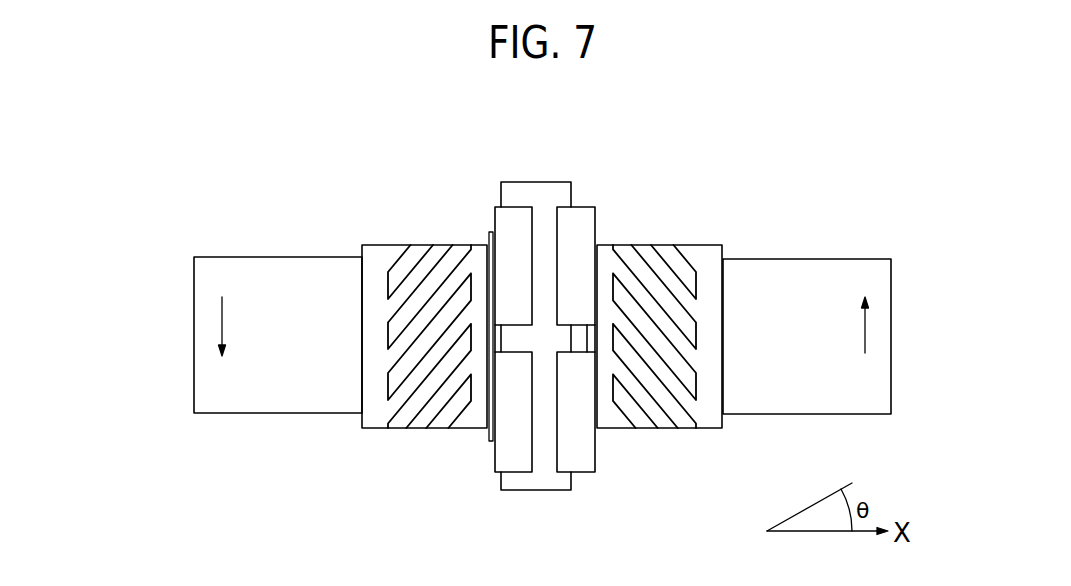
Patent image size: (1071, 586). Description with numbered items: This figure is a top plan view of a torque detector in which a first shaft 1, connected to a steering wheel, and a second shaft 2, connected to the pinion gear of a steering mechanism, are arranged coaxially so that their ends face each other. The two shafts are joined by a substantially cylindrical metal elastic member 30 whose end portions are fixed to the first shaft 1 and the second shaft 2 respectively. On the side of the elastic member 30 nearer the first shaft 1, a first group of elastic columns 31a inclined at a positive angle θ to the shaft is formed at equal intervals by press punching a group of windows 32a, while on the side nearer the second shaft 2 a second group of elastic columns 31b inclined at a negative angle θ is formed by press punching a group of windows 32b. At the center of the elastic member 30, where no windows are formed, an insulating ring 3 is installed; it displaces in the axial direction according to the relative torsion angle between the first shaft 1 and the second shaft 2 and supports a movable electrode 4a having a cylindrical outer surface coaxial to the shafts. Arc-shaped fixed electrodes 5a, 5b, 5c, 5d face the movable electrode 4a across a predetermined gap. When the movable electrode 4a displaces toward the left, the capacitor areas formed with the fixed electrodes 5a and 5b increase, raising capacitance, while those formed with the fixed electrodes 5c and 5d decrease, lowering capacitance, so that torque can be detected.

The first shaft 1 is at (219, 263).
The second shaft 2 is at (853, 268).
The ring 3 is at (489, 438).
The movable electrode 4a is at (510, 193).
The first fixed electrode 5a is at (502, 218).
The second fixed electrode 5b is at (505, 463).
The fixed electrode 5c is at (589, 462).
The fixed electrode 5d is at (590, 215).
The elastic member 30 is at (378, 425).
The first group of elastic columns 31a is at (418, 272).
The second group of elastic columns 31b is at (663, 268).
The group of windows 32a is at (393, 325).
The group of windows 32b is at (690, 328).